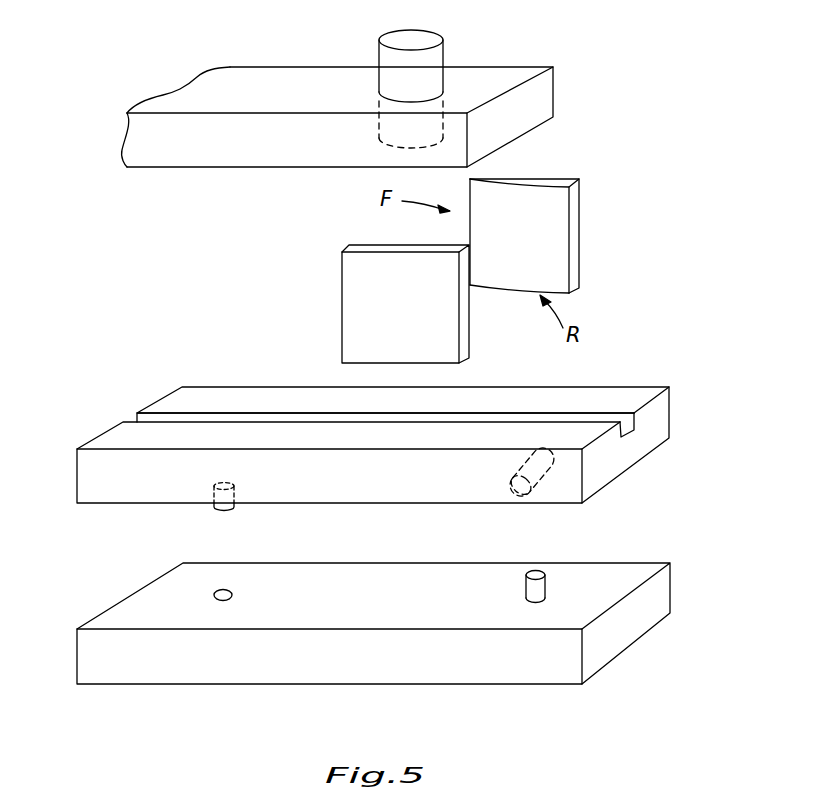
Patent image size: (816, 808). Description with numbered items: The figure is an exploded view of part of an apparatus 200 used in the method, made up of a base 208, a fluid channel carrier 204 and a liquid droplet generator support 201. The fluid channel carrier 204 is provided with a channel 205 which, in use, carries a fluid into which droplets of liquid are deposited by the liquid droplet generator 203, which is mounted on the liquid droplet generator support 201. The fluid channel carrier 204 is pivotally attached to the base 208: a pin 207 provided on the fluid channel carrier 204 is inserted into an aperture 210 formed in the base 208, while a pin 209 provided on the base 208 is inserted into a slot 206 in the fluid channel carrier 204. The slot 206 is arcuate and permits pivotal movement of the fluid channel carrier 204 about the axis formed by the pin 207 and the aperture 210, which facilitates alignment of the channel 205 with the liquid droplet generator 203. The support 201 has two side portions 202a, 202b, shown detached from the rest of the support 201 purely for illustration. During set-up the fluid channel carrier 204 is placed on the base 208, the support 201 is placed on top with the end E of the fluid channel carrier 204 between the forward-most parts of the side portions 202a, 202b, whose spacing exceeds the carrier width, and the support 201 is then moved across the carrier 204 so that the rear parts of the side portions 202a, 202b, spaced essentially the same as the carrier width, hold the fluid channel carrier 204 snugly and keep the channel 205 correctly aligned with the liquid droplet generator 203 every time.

The apparatus 200 is at (267, 78).
The liquid droplet generator support 201 is at (530, 115).
The side portion 202a is at (364, 311).
The side portion 202b is at (575, 233).
The liquid droplet generator 203 is at (382, 54).
The fluid channel carrier 204 is at (408, 421).
The channel 205 is at (581, 414).
The slot 206 is at (512, 479).
The pin 207 is at (228, 509).
The base 208 is at (548, 667).
The pin 209 is at (537, 570).
The aperture 210 is at (214, 592).
The end of fluid channel carrier E is at (655, 425).